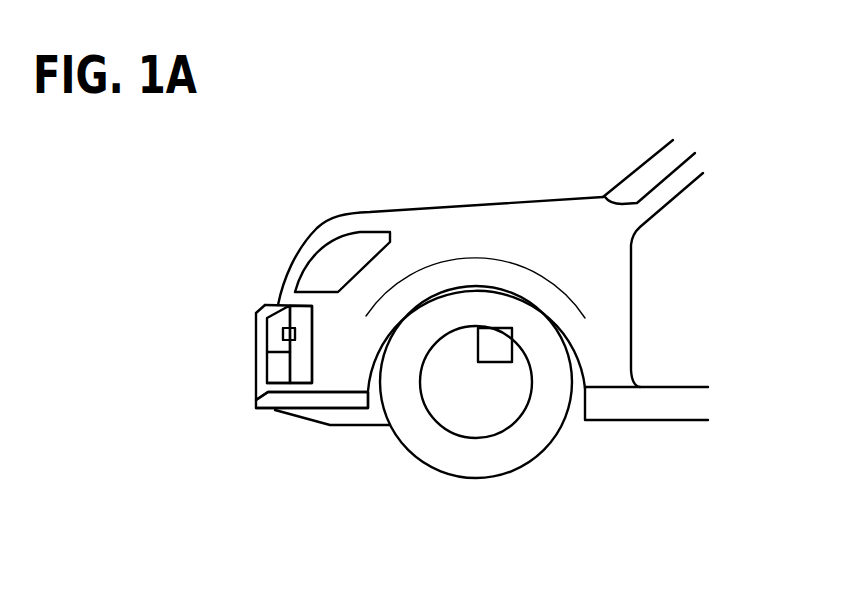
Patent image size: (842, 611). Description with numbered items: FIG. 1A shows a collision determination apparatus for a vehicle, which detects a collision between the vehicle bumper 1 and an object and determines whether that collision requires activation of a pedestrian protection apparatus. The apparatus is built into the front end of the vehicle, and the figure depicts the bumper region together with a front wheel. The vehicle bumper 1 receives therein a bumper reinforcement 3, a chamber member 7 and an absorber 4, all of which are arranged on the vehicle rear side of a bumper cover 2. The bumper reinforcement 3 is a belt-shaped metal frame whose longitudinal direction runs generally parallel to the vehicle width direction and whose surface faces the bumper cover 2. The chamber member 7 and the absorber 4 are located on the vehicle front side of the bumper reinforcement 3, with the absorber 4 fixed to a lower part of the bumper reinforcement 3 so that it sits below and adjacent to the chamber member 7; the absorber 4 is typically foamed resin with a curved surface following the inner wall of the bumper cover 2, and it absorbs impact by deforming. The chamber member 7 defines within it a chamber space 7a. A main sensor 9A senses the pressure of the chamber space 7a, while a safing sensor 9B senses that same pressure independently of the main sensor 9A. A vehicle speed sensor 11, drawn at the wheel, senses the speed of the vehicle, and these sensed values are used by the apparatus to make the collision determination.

The vehicle bumper 1 is at (228, 307).
The bumper cover 2 is at (258, 307).
The bumper reinforcement 3 is at (302, 322).
The absorber 4 is at (277, 374).
The chamber member 7 is at (277, 307).
The chamber space 7a is at (278, 330).
The main sensor 9A is at (206, 373).
The safing sensor 9B is at (283, 334).
The vehicle speed sensor 11 is at (495, 347).